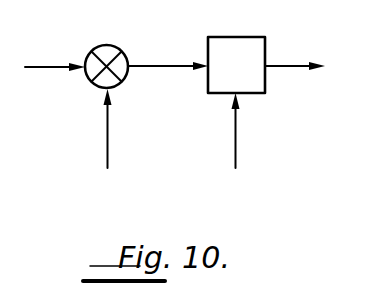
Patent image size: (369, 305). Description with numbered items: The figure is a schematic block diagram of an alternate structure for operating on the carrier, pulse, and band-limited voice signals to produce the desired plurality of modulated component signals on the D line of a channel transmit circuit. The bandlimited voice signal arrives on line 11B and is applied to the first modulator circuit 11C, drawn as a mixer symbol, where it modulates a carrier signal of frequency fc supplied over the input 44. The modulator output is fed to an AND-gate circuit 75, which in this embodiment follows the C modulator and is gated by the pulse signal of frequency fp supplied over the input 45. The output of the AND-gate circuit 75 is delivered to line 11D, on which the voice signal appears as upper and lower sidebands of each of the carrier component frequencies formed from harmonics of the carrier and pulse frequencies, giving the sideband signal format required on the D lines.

The line 11B is at (33, 67).
The first modulator circuit 11C is at (106, 44).
The AND-gate circuit 75 is at (228, 37).
The line 11D is at (283, 66).
The carrier frequency input fc 44 is at (108, 113).
The pulse frequency input fp 45 is at (236, 113).